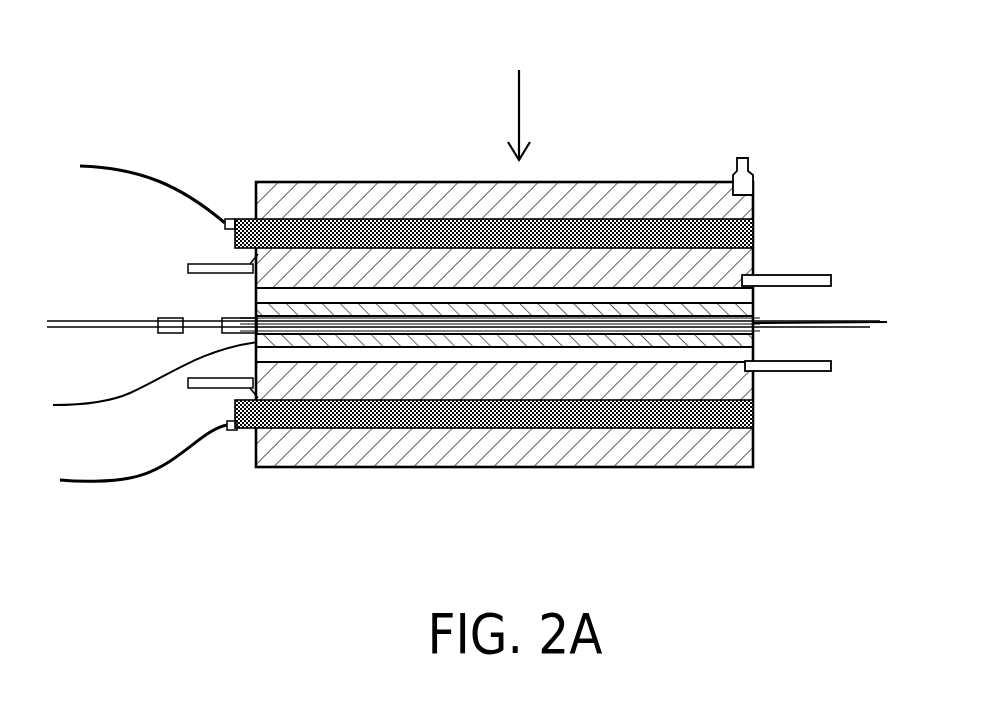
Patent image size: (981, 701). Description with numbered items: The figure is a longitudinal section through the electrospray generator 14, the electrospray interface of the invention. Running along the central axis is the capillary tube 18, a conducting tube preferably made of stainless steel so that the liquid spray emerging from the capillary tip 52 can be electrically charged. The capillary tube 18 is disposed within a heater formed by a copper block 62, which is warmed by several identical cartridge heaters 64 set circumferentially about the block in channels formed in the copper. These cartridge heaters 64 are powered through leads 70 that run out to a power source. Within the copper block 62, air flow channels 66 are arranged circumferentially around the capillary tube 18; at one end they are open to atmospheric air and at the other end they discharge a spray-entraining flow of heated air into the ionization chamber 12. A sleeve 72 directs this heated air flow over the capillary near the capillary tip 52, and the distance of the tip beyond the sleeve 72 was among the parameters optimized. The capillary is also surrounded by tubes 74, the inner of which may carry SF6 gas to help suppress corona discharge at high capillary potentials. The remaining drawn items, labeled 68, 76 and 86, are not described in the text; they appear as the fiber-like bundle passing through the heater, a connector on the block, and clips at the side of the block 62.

The ionization chamber 12 is at (805, 239).
The electrospray generator 14 is at (516, 91).
The capillary tube 18 is at (191, 330).
The capillary tip 52 is at (887, 322).
The copper block 62 is at (627, 468).
The cartridge heater 64 is at (226, 219).
The air flow channel 66 is at (250, 295).
The fiber bundle 68 is at (73, 322).
The lead 70 is at (100, 165).
The sleeve 72 is at (820, 373).
The tube 74 is at (743, 317).
The connector 76 is at (744, 158).
The clip 86 is at (190, 264).